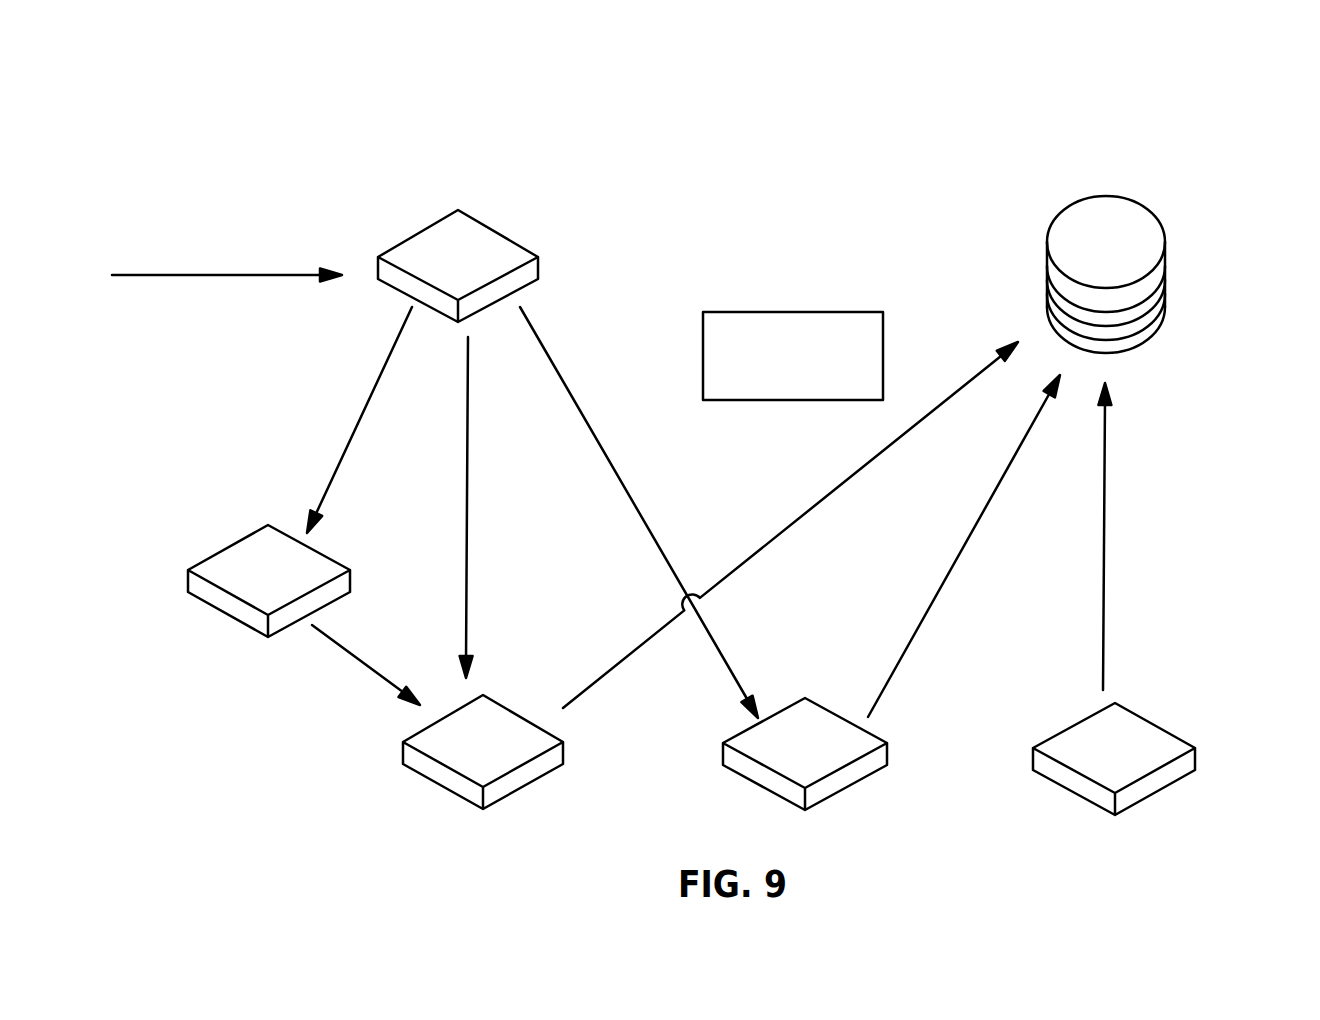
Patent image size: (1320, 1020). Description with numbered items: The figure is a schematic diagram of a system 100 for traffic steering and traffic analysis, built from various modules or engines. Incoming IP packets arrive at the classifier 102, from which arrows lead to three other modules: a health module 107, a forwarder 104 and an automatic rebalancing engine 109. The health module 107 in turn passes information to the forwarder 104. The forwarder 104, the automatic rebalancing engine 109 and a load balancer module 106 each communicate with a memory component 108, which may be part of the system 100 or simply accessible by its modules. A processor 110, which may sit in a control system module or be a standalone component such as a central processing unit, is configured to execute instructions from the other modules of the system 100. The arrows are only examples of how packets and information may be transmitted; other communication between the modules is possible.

The system 100 is at (1031, 132).
The classifier 102 is at (530, 285).
The forwarder 104 is at (520, 715).
The load balancer module 106 is at (1172, 733).
The health module 107 is at (225, 547).
The memory component 108 is at (1163, 280).
The automatic rebalancing engine 109 is at (833, 710).
The processor 110 is at (798, 320).